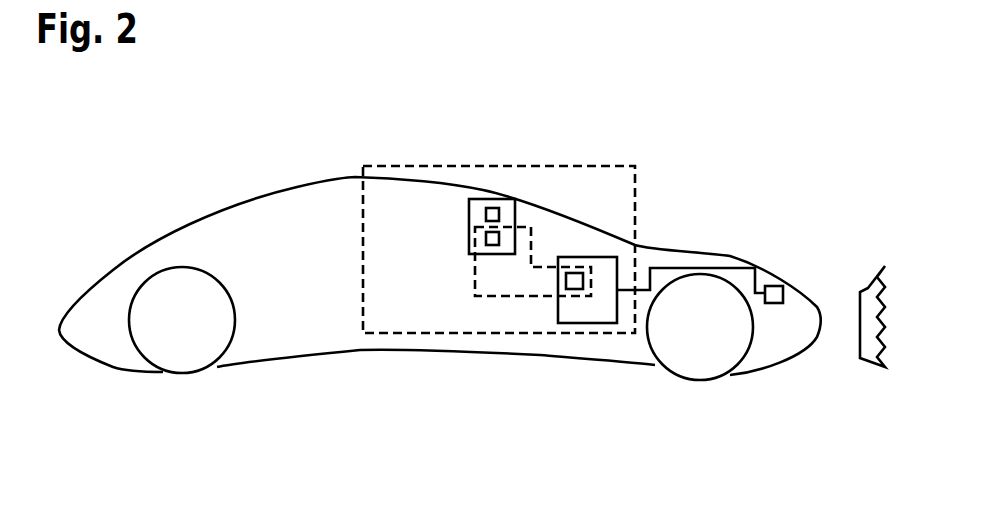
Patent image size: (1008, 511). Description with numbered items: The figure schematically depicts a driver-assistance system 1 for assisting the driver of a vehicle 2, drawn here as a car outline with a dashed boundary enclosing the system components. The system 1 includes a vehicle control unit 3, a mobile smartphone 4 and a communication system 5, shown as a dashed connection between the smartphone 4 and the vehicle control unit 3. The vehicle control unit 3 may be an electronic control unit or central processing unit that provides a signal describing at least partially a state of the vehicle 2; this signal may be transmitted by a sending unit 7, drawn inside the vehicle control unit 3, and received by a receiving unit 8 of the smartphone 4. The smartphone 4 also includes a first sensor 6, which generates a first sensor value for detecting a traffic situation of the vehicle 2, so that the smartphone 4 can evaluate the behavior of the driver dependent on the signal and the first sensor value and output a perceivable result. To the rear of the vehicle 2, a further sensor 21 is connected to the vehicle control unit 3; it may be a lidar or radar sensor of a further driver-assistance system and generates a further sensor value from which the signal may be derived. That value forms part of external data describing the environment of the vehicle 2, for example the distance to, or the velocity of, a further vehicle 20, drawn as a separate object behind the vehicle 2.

The driver-assistance system 1 is at (532, 166).
The vehicle 2 is at (652, 124).
The vehicle control unit 3 is at (587, 323).
The mobile smartphone 4 is at (469, 212).
The communication system 5 is at (516, 297).
The first sensor 6 is at (492, 208).
The sending unit 7 is at (577, 273).
The receiving unit 8 is at (492, 245).
The further vehicle 20 is at (870, 290).
The further sensor 21 is at (777, 286).